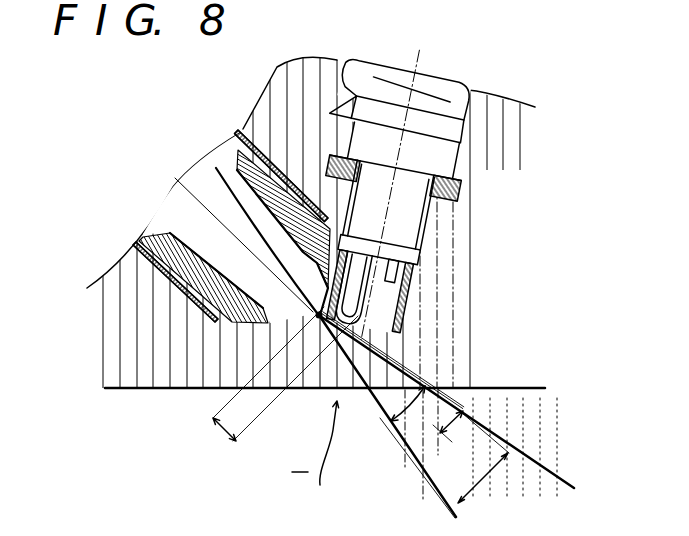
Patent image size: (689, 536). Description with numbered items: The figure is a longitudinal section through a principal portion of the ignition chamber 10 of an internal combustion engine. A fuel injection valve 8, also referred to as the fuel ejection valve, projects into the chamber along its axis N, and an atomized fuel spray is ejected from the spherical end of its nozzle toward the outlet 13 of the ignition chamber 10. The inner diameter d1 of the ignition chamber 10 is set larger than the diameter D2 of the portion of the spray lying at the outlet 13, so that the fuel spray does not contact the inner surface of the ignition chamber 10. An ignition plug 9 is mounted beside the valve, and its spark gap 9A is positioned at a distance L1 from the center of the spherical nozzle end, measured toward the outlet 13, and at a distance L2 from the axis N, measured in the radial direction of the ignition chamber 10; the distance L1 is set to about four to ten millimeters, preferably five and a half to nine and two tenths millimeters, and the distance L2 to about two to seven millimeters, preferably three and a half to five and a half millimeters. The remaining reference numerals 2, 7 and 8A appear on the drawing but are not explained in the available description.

The cylinder head 2 is at (165, 375).
The fuel injection valve 8 is at (177, 221).
The nozzle tip / injection hole 8A is at (307, 317).
The ignition plug 9 is at (412, 213).
The spark gap 9A is at (366, 321).
The ignition chamber 10 is at (333, 365).
The combustion chamber 7 is at (300, 461).
The outlet of the ignition chamber 13 is at (315, 452).
The axis of the fuel injection valve N is at (210, 162).
The distance L1 is at (279, 380).
The distance L2 is at (458, 430).
The inner diameter of the ignition chamber d1 is at (480, 476).
The diameter of the atomized fuel spray at the outlet D2 is at (393, 421).